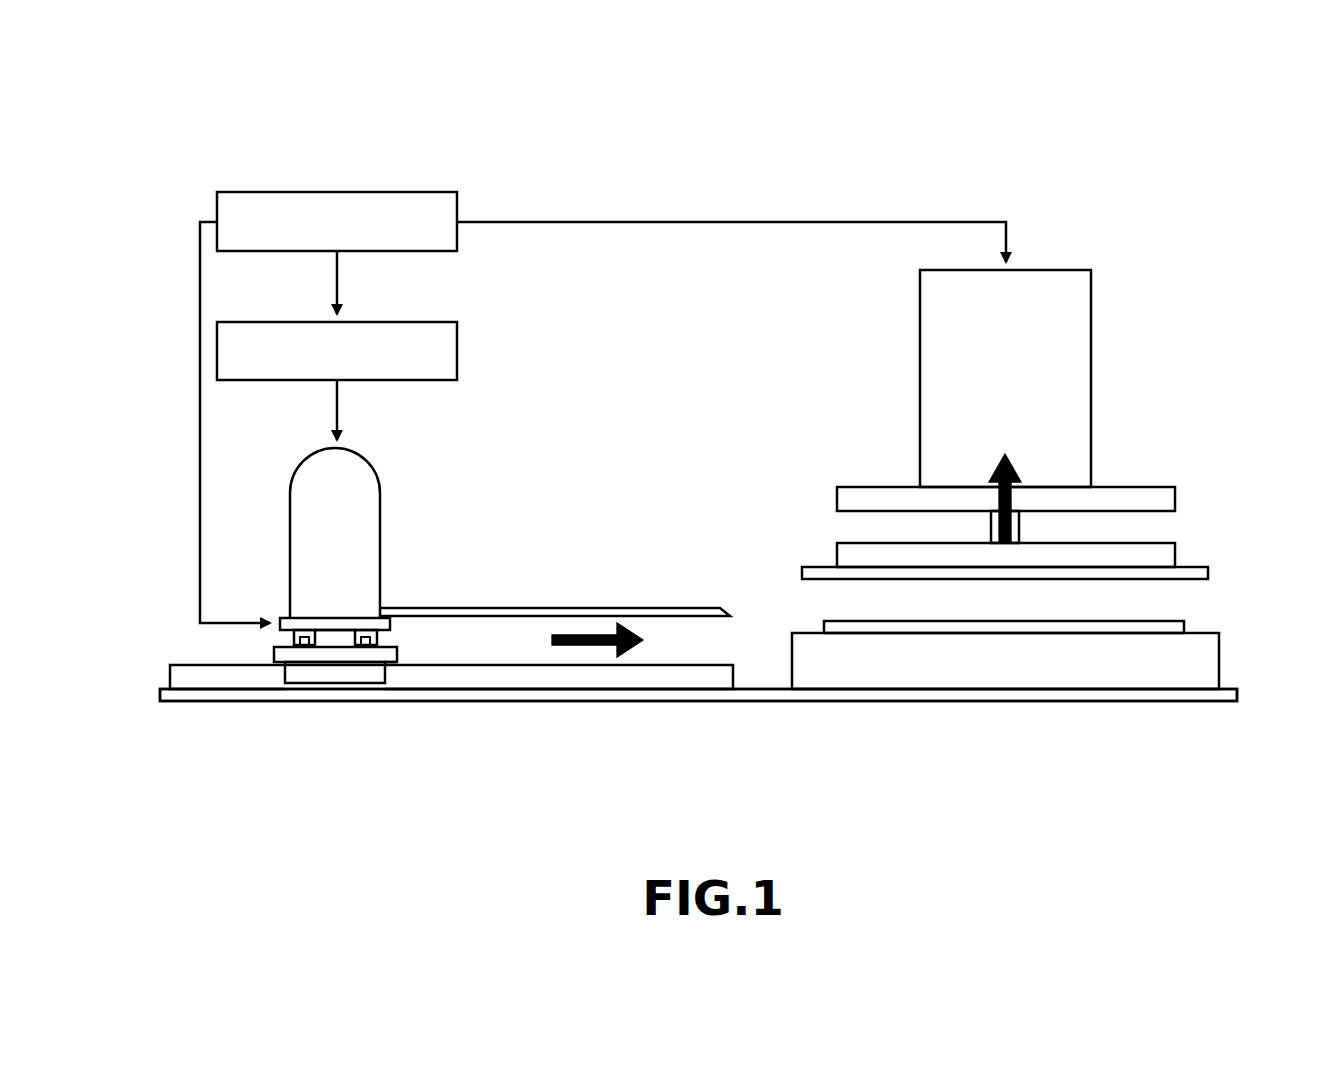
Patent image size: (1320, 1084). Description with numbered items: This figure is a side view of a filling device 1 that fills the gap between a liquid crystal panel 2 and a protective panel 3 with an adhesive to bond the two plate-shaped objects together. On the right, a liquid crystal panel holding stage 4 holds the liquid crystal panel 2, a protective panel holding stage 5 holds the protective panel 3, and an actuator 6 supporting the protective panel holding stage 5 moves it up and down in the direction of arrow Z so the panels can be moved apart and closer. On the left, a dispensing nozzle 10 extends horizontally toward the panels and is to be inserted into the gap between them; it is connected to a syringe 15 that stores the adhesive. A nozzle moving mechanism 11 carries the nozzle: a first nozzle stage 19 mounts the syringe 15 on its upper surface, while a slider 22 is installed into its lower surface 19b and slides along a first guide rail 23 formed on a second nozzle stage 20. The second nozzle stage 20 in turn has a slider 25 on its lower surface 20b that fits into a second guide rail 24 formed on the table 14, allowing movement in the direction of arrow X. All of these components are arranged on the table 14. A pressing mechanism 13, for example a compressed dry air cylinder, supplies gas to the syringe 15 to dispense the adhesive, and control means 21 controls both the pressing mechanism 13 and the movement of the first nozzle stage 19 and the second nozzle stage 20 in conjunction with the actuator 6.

The filling device 1 is at (672, 118).
The liquid crystal panel 2 is at (1184, 628).
The protective panel 3 is at (1208, 572).
The liquid crystal panel holding stage 4 is at (1219, 660).
The protective panel holding stage 5 is at (1175, 547).
The actuator 6 is at (1091, 444).
The dispensing nozzle 10 is at (560, 608).
The nozzle moving mechanism 11 is at (172, 386).
The pressing mechanism 13 is at (298, 322).
The table 14 is at (1000, 690).
The syringe 15 is at (372, 466).
The first nozzle stage 19 is at (290, 618).
The lower surface 19b is at (330, 633).
The second nozzle stage 20 is at (338, 653).
The lower surface 20b is at (390, 667).
The control means 21 is at (298, 192).
The slider 22 is at (290, 640).
The first guide rail 23 is at (294, 646).
The second guide rail 24 is at (478, 665).
The slider 25 is at (365, 675).